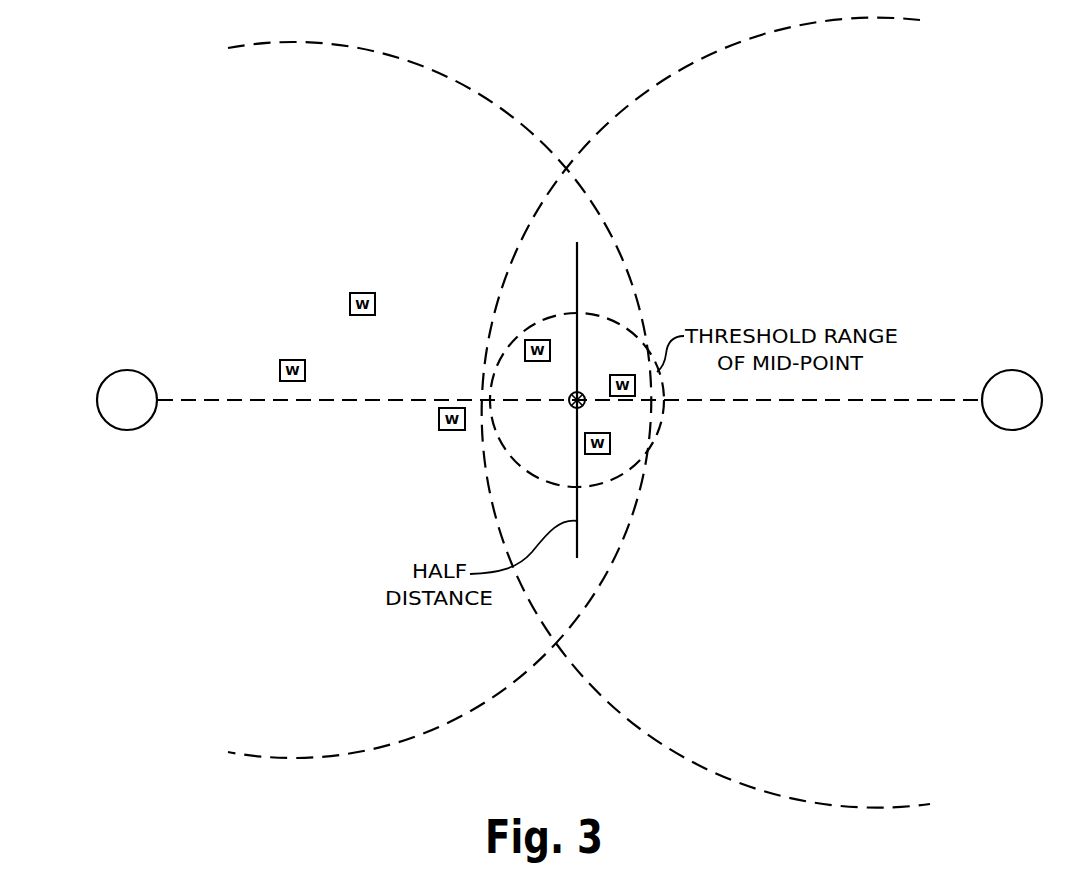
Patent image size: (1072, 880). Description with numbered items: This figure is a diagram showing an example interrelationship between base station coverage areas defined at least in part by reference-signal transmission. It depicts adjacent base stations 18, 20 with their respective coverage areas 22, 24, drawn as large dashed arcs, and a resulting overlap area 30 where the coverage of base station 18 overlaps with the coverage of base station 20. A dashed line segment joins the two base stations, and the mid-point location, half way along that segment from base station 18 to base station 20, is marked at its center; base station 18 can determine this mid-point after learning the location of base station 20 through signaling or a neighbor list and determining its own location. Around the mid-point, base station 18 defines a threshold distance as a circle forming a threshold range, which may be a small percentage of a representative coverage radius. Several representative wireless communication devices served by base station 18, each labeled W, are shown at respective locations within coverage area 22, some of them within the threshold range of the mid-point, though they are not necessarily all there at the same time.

The base station 18 is at (121, 371).
The base station 20 is at (1019, 371).
The coverage area 22 is at (426, 68).
The coverage area 24 is at (686, 63).
The overlap area 30 is at (596, 212).